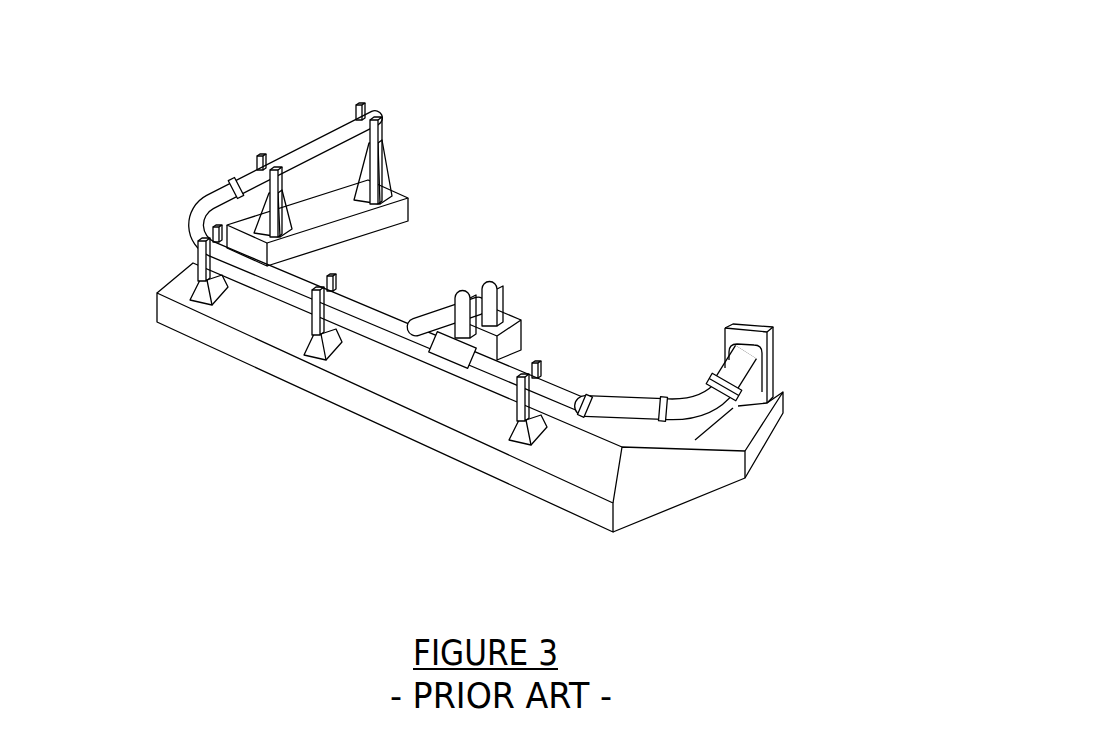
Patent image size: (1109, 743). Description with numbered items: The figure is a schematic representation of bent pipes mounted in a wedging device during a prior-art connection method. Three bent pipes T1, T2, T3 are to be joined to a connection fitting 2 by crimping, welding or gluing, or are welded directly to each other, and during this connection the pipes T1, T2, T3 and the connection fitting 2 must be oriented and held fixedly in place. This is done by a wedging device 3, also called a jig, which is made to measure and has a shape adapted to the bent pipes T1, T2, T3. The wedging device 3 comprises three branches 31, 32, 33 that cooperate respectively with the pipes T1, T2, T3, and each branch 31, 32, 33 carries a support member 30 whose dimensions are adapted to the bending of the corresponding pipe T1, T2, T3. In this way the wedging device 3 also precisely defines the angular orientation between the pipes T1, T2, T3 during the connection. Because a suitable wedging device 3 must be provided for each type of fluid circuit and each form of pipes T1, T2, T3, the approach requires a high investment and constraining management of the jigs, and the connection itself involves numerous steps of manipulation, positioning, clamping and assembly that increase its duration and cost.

The connection fitting 2 is at (402, 356).
The wedging device 3 is at (318, 409).
The support member 30 is at (363, 177).
The branch 31 is at (311, 212).
The branch 32 is at (793, 444).
The branch 33 is at (539, 322).
The bent pipe T1 is at (297, 165).
The bent pipe T2 is at (737, 373).
The bent pipe T3 is at (488, 290).